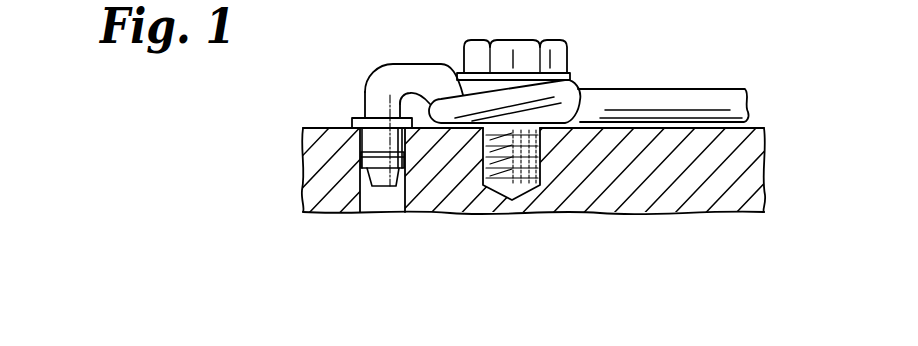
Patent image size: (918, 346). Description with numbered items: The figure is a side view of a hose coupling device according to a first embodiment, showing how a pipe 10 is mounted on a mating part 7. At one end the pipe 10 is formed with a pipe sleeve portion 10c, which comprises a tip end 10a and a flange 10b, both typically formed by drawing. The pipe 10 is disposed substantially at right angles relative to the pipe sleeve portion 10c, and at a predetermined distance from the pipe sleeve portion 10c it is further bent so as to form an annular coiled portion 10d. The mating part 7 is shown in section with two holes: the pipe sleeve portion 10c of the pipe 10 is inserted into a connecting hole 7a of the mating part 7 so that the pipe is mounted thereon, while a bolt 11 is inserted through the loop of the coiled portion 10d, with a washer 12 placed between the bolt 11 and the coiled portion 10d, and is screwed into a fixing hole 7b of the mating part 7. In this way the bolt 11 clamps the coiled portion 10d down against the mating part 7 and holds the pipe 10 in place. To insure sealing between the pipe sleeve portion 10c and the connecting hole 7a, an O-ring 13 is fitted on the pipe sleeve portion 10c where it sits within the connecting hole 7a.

The mating part 7 is at (663, 208).
The connecting hole 7a is at (361, 214).
The fixing hole 7b is at (526, 187).
The pipe 10 is at (683, 88).
The tip end 10a is at (388, 214).
The flange 10b is at (352, 117).
The pipe sleeve portion 10c is at (351, 126).
The coiled portion 10d is at (447, 68).
The bolt 11 is at (506, 40).
The washer 12 is at (571, 79).
The O-ring 13 is at (370, 135).